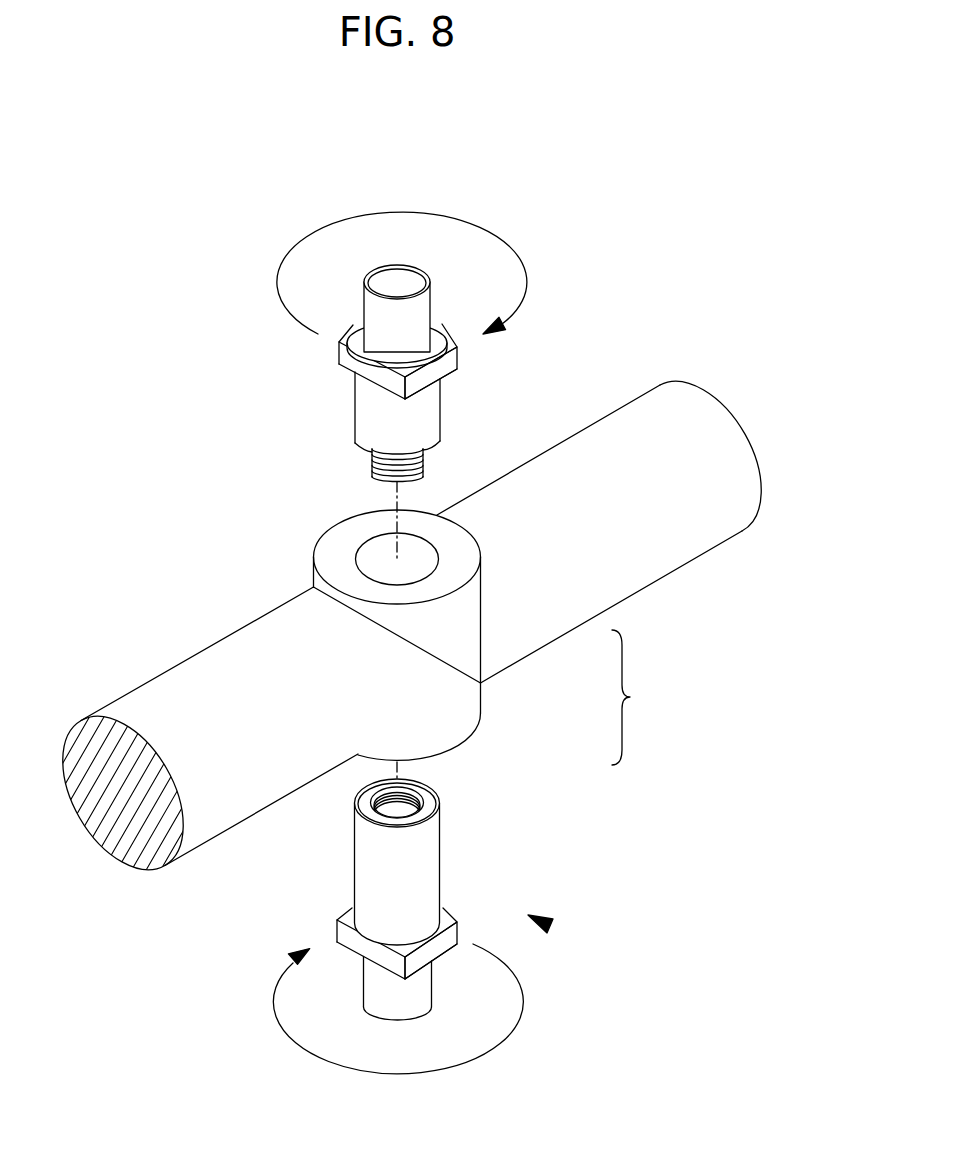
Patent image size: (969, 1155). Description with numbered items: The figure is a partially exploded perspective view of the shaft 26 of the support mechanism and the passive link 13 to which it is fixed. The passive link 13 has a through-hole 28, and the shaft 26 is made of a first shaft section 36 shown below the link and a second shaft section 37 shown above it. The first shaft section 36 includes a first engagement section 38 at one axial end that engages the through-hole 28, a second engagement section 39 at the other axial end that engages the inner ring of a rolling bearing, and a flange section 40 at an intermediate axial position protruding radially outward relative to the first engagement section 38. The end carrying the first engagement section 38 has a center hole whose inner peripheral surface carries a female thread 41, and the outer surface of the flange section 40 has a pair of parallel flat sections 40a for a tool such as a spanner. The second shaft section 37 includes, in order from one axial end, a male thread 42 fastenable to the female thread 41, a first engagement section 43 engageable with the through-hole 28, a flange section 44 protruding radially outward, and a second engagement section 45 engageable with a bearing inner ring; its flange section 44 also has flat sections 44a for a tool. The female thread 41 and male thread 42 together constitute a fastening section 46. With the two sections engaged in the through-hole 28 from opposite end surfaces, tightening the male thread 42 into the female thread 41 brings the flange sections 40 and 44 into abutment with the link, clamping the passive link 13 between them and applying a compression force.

The passive link 13 is at (613, 432).
The shaft 26 is at (550, 925).
The through-hole 28 is at (372, 553).
The first shaft section 36 is at (433, 1037).
The second shaft section 37 is at (355, 238).
The first engagement section 38 is at (427, 855).
The second engagement section 39 is at (378, 1007).
The flange section 40 is at (360, 957).
The flat sections 40a is at (442, 950).
The female thread 41 is at (420, 787).
The male thread 42 is at (423, 460).
The first engagement section 43 is at (365, 425).
The flange section 44 is at (347, 373).
The flat sections 44a is at (447, 368).
The second engagement section 45 is at (422, 307).
The fastening section 46 is at (640, 697).